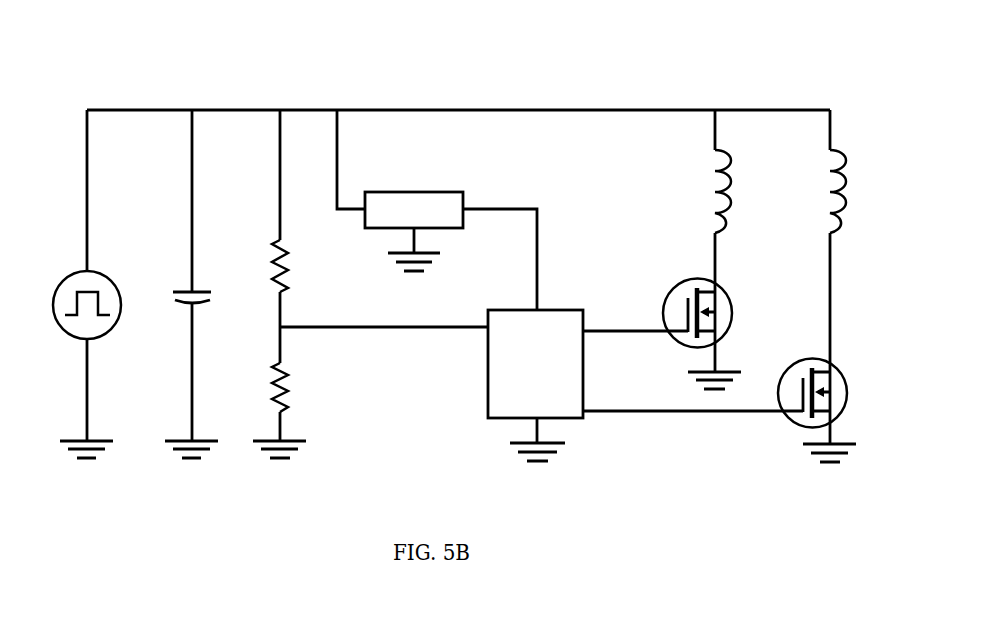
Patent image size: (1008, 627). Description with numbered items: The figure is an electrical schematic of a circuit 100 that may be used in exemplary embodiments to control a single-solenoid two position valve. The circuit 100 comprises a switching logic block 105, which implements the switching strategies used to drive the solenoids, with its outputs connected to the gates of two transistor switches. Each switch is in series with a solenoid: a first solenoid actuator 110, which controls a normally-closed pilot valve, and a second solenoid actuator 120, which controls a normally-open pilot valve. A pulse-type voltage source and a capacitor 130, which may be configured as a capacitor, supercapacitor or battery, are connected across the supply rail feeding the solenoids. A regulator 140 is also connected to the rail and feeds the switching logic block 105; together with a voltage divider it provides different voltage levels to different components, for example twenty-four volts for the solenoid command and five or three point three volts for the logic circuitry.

The circuit 100 is at (126, 80).
The switching logic block 105 is at (487, 362).
The first solenoid actuator 110 is at (727, 234).
The second solenoid actuator 120 is at (843, 234).
The capacitor 130 is at (203, 304).
The regulator 140 is at (397, 192).